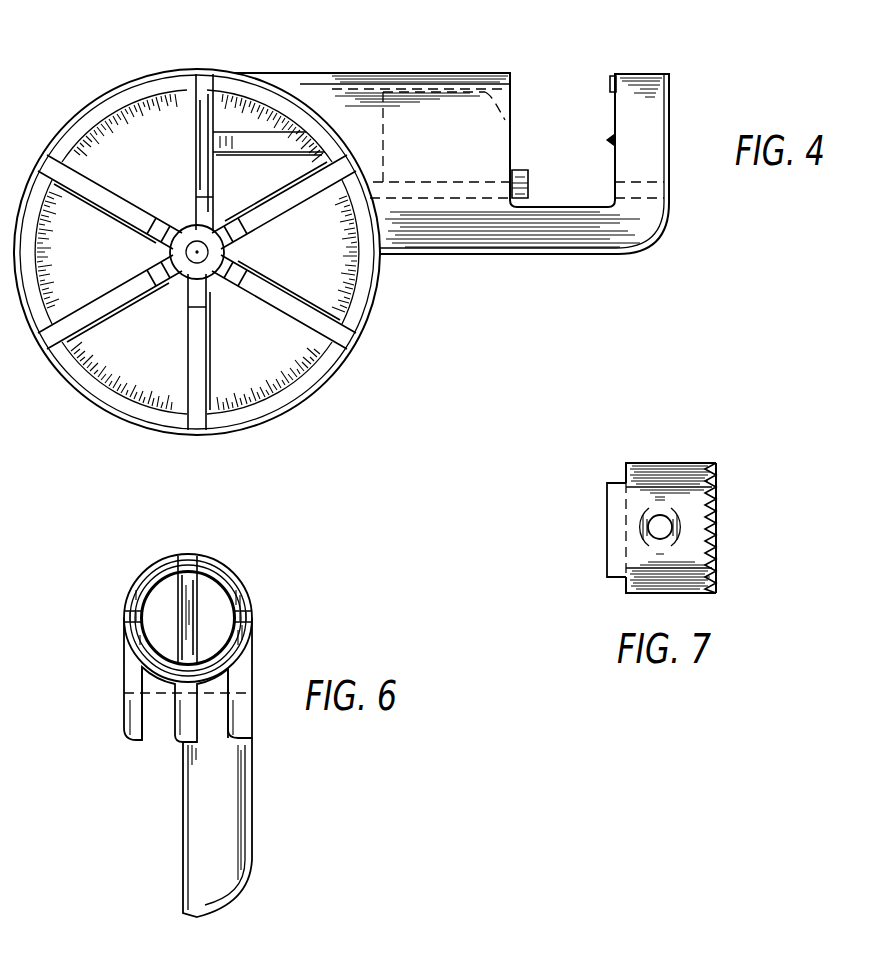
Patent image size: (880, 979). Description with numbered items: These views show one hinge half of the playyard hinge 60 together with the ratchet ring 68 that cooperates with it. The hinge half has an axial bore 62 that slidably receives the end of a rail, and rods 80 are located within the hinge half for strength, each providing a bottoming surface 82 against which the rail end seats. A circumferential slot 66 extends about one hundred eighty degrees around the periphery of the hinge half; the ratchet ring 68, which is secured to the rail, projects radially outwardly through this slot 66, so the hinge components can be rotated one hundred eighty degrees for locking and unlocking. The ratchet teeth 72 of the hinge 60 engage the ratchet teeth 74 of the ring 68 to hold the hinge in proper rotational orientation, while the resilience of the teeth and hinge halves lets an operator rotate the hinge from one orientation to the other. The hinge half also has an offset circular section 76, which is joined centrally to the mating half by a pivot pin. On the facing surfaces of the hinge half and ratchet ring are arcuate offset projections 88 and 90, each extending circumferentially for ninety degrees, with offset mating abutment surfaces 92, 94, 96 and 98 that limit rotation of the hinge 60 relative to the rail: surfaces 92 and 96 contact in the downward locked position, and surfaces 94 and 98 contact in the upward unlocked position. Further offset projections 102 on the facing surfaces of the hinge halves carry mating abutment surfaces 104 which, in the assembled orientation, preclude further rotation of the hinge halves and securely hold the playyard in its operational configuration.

In FIG. 4, the hinge 60 is at (146, 72).
In FIG. 6, the hinge 60 is at (170, 560).
In FIG. 4, the axial bore 62 is at (508, 117).
In FIG. 4, the circumferential slot 66 is at (517, 72).
In FIG. 7, the ratchet ring 68 is at (645, 463).
In FIG. 4, the ratchet teeth 72 is at (610, 136).
In FIG. 6, the ratchet teeth 72 is at (128, 600).
In FIG. 7, the ratchet teeth 74 is at (716, 490).
In FIG. 4, the offset circular section 76 is at (264, 412).
In FIG. 4, the rod 80 is at (122, 294).
In FIG. 4, the bottoming surface 82 is at (386, 142).
In FIG. 4, the offset projection 88 is at (532, 180).
In FIG. 7, the offset projection 90 is at (615, 517).
In FIG. 6, the abutment surface 92 is at (142, 663).
In FIG. 6, the abutment surface 94 is at (245, 650).
In FIG. 7, the abutment surface 96 is at (622, 483).
In FIG. 7, the abutment surface 98 is at (615, 578).
In FIG. 4, the offset projection 102 is at (248, 152).
In FIG. 4, the abutment surface 104 is at (196, 150).